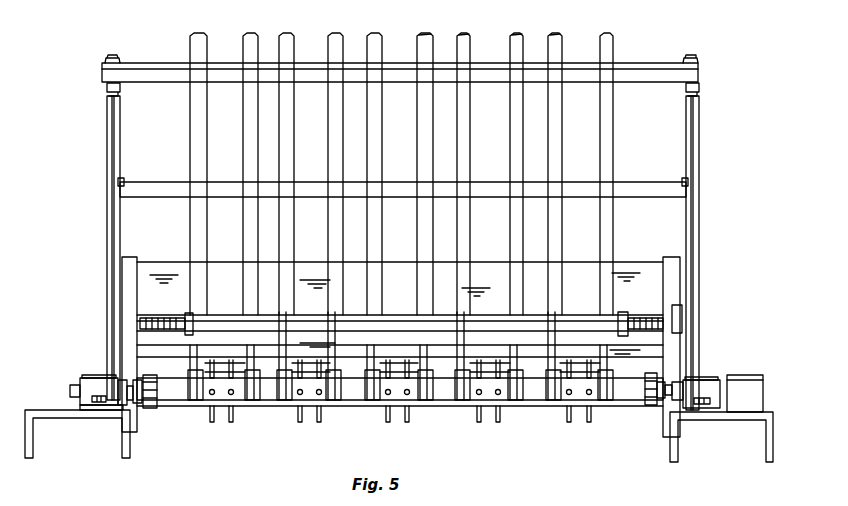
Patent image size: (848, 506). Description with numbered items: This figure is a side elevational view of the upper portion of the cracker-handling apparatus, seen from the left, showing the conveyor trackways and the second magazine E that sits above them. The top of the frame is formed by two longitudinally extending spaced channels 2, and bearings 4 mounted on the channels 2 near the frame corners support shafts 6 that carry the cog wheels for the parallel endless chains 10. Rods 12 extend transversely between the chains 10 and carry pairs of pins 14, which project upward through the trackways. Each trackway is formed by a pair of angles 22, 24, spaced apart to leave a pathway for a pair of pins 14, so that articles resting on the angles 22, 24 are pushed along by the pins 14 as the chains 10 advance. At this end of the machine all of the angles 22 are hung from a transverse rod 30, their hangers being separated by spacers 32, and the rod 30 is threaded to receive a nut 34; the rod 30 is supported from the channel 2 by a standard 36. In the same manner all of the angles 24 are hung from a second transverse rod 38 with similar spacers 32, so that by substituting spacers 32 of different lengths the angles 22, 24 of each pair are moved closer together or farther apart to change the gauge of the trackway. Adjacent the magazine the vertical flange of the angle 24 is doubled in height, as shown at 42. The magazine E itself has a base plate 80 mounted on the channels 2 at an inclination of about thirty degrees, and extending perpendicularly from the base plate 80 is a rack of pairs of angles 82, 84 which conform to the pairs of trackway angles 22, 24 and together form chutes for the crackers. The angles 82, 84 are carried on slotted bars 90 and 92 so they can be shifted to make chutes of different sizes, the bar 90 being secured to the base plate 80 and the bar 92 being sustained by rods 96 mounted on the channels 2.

The channel 2 is at (30, 450).
The bearing 4 is at (98, 380).
The shaft 6 is at (137, 406).
The endless chain 10 is at (152, 408).
The rod 12 is at (343, 412).
The pin 14 is at (232, 424).
The angle 22 is at (512, 405).
The angle 24 is at (198, 400).
The transverse rod 30 is at (690, 324).
The spacer 32 is at (403, 328).
The nut 34 is at (620, 318).
The standard 36 is at (668, 348).
The transverse rod 38 is at (128, 323).
The doubled vertical flange 42 is at (515, 362).
The base plate 80 is at (302, 362).
The angle 82 is at (518, 40).
The angle 84 is at (464, 42).
The bar 90 is at (652, 190).
The bar 92 is at (699, 71).
The rod 96 is at (700, 139).
The second magazine E is at (106, 147).